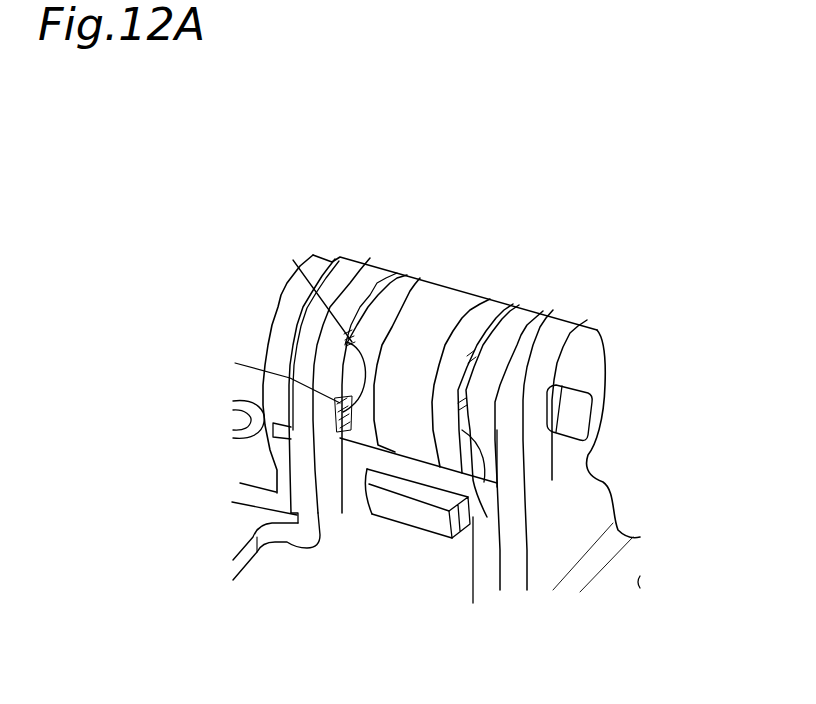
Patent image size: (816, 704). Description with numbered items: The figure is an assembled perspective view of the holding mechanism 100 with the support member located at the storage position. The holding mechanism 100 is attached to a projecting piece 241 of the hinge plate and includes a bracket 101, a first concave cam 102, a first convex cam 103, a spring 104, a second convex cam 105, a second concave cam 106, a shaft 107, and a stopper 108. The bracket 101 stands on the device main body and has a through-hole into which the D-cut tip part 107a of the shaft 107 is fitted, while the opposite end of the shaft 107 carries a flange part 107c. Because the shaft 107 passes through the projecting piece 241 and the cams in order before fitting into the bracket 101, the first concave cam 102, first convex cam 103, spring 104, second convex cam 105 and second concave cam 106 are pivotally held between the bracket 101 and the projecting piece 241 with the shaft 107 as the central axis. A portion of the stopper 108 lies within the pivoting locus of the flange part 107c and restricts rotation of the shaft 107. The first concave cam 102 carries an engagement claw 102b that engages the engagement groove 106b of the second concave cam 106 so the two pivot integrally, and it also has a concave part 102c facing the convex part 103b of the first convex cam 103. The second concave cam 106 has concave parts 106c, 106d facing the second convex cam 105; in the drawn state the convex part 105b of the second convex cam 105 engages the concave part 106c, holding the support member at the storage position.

The holding mechanism 100 is at (228, 131).
The bracket 101 is at (582, 345).
The first concave cam 102 is at (531, 313).
The engagement claw 102b is at (412, 530).
The concave part 102c is at (473, 560).
The first convex cam 103 is at (493, 303).
The convex part 103b is at (463, 377).
The spring 104 is at (448, 294).
The second convex cam 105 is at (412, 277).
The convex part 105b is at (345, 406).
The second concave cam 106 is at (380, 263).
The engagement groove 106b is at (363, 420).
The concave part 106c is at (293, 260).
The concave part 106d is at (332, 540).
The shaft 107 is at (280, 326).
The tip part 107a is at (577, 405).
The flange part 107c is at (287, 288).
The stopper 108 is at (237, 377).
The projecting piece 241 is at (343, 260).